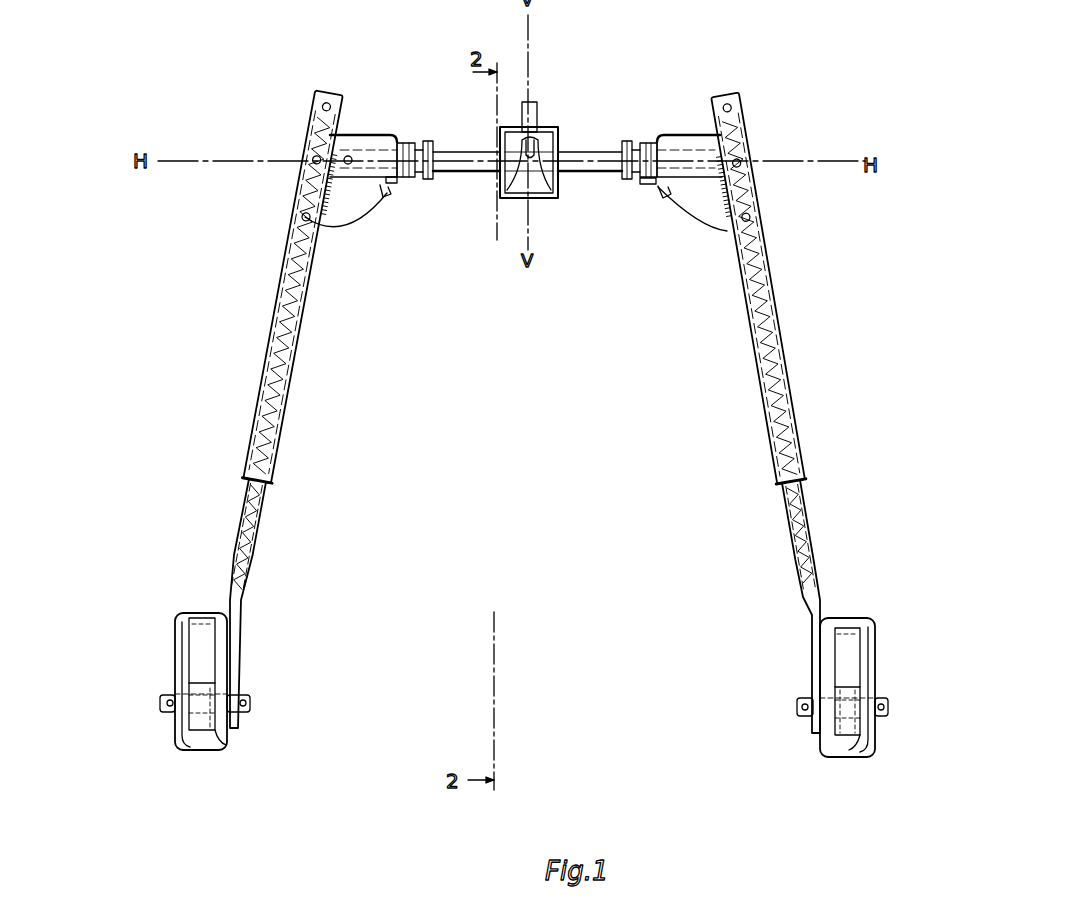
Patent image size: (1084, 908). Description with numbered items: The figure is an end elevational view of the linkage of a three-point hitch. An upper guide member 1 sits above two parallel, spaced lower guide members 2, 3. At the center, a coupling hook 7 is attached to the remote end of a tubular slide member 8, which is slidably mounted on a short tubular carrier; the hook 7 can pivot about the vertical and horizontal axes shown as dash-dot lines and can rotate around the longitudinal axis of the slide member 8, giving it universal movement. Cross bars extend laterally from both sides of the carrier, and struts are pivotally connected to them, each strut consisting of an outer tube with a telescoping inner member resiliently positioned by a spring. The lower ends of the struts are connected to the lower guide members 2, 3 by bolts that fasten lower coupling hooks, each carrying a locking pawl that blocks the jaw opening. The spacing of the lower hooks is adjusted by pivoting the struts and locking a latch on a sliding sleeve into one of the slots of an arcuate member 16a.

The upper guide member 1 is at (554, 116).
The lower guide member 2 is at (882, 648).
The lower guide member 3 is at (166, 658).
The coupling hook 7 is at (546, 160).
The tubular slide member 8 is at (500, 127).
The arcuate member 16a is at (393, 134).